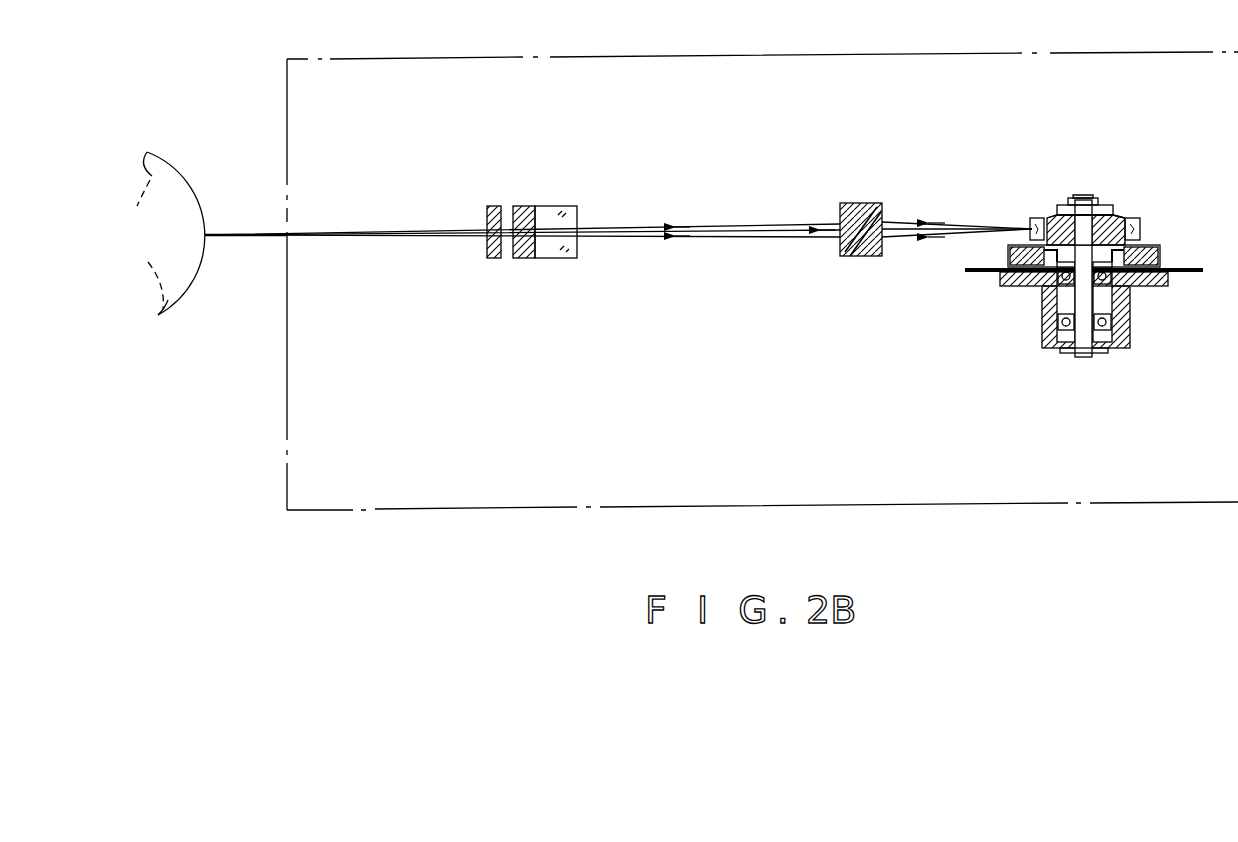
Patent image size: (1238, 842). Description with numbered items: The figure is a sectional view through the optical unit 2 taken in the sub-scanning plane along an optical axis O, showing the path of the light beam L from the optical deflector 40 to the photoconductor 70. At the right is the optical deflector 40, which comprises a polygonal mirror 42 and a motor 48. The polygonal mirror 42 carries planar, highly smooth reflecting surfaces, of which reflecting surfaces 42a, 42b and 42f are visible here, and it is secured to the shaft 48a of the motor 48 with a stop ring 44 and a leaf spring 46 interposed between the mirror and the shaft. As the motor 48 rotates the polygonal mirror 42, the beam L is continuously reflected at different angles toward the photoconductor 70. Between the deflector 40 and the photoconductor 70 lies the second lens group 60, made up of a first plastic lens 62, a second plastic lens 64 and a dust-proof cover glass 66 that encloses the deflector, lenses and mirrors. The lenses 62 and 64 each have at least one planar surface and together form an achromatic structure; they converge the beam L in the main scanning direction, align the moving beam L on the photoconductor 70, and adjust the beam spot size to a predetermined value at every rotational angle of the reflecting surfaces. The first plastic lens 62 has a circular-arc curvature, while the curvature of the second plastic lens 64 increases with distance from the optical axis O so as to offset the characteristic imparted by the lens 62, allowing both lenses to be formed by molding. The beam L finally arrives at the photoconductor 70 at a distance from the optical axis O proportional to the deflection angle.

The optical unit 2 is at (1066, 49).
The photoconductor 70 is at (187, 290).
The optical axis O is at (730, 232).
The light beam L is at (905, 232).
The second lens group 60 is at (673, 243).
The dust-proof cover glass 66 is at (497, 260).
The second plastic lens 64 is at (553, 279).
The first plastic lens 62 is at (857, 257).
The optical deflector 40 is at (1100, 282).
The polygonal mirror 42 is at (1128, 216).
The reflecting surface 42a is at (1055, 212).
The reflecting surface 42b is at (1142, 232).
The reflecting surface 42f is at (1004, 196).
The stop ring 44 is at (1097, 207).
The leaf spring 46 is at (1112, 210).
The motor 48 is at (1040, 308).
The shaft 48a is at (1083, 357).